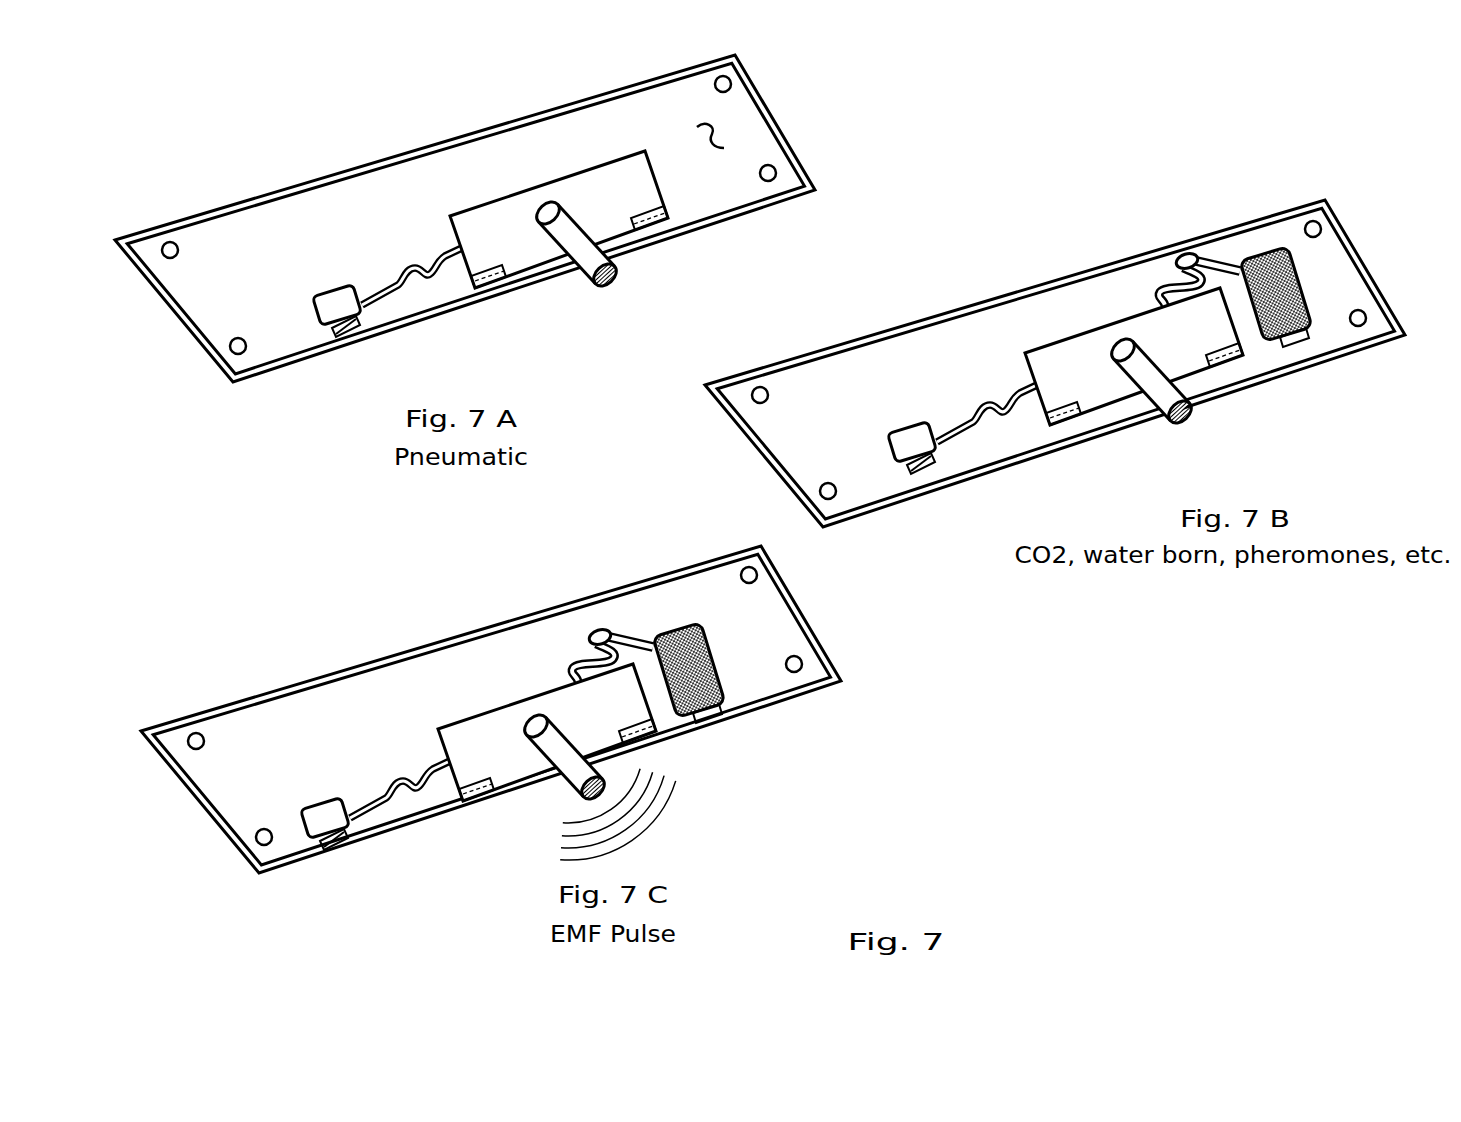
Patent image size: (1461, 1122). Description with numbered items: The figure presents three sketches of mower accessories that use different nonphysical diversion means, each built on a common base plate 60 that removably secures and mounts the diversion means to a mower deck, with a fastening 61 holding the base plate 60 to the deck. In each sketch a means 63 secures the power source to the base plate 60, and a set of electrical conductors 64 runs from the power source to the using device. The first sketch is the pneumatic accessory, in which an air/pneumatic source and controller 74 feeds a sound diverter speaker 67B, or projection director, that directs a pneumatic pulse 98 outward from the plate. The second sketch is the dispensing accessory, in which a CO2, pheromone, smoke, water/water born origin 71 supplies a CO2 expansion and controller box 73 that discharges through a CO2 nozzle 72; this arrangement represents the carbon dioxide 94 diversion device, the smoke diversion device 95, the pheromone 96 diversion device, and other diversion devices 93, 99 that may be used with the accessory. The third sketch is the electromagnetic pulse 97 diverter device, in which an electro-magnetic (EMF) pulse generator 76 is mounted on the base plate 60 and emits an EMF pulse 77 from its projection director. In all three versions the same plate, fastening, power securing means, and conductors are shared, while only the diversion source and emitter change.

In FIG. 7A, the base plate 60 is at (719, 131).
In FIG. 7A, the fastening 61 is at (166, 262).
In FIG. 7B, the fastening 61 is at (758, 405).
In FIG. 7C, the fastening 61 is at (194, 752).
In FIG. 7A, the means to secure power source to base 63 is at (330, 286).
In FIG. 7B, the means to secure power source to base 63 is at (907, 438).
In FIG. 7C, the means to secure power source to base 63 is at (326, 812).
In FIG. 7A, the set of electrical conductors 64 is at (376, 308).
In FIG. 7B, the set of electrical conductors 64 is at (960, 443).
In FIG. 7C, the set of electrical conductors 64 is at (389, 808).
In FIG. 7A, the air/pneumatic source and controller 74 is at (489, 222).
In FIG. 7A, the sound diverter speaker 67B is at (592, 278).
In FIG. 7A, the pneumatic pulse 98 is at (256, 432).
In FIG. 7B, the CO2 expansion and controller box 73 is at (1057, 362).
In FIG. 7B, the CO2 nozzle 72 is at (1167, 413).
In FIG. 7B, the CO2, pheromone, smoke, water/water born origin 71 is at (1278, 286).
In FIG. 7B, the other diversion devices 93 is at (900, 576).
In FIG. 7B, the carbon dioxide diversion device 94 is at (900, 576).
In FIG. 7B, the smoke diversion device 95 is at (900, 576).
In FIG. 7B, the pheromone diversion device 96 is at (900, 576).
In FIG. 7B, the deterrent agent 99 is at (962, 529).
In FIG. 7C, the electro-magnetic (EMF) pulse generator 76 is at (478, 742).
In FIG. 7C, the EMF pulse 77 is at (640, 817).
In FIG. 7C, the Electromagnetic pulse diverter device 97 is at (452, 880).